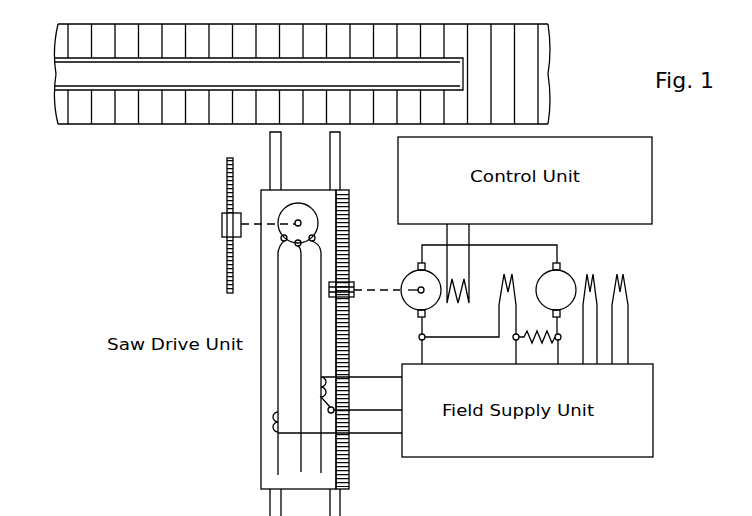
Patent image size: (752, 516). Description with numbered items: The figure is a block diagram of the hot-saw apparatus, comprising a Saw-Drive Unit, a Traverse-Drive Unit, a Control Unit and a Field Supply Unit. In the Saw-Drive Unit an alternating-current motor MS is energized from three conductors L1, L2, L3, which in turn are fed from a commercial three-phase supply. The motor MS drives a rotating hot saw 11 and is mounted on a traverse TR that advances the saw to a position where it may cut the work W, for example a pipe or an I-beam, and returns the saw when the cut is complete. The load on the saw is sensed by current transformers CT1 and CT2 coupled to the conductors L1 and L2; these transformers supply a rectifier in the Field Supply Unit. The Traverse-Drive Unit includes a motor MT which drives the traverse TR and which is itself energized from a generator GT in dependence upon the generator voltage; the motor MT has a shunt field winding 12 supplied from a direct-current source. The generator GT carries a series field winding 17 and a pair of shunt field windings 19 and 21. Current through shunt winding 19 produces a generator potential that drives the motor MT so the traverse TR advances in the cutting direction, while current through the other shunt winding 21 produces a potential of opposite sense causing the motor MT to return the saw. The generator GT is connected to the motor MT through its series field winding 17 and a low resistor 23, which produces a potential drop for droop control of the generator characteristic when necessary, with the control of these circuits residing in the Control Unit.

The work W is at (52, 75).
The rotating hot saw 11 is at (226, 193).
The alternating-current motor MS is at (292, 202).
The traverse TR is at (351, 351).
The motor MT is at (409, 270).
The shunt field winding 12 is at (450, 305).
The series field winding 17 is at (505, 273).
The generator GT is at (548, 272).
The shunt field winding 19 is at (583, 275).
The shunt field winding 21 is at (616, 275).
The low resistor 23 is at (547, 332).
The current transformer CT1 is at (315, 388).
The current transformer CT2 is at (271, 417).
The conductor L1 is at (318, 474).
The conductor L2 is at (302, 464).
The conductor L3 is at (277, 459).